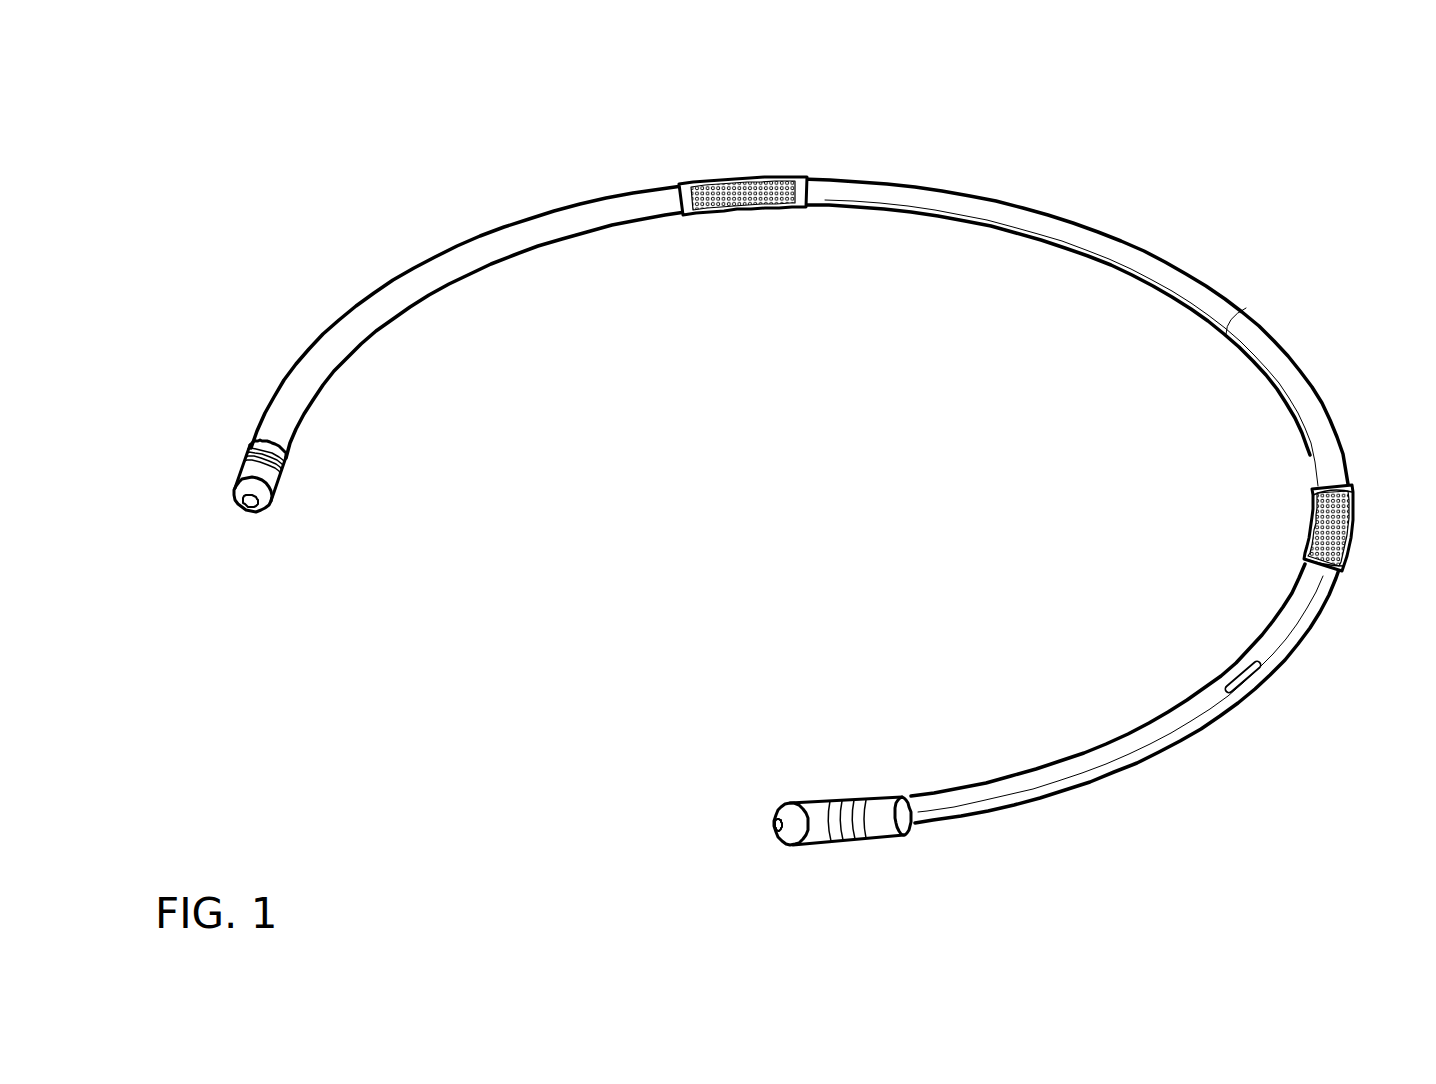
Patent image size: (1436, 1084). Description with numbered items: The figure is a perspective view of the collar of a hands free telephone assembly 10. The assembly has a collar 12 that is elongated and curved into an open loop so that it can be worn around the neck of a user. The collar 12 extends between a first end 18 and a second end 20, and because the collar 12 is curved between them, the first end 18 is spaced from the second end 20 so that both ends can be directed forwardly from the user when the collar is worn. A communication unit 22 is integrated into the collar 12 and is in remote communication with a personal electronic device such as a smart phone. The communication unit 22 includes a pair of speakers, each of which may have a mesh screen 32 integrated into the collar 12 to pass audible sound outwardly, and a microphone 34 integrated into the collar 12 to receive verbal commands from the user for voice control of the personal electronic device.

The hands free telephone assembly 10 is at (750, 493).
The collar 12 is at (925, 186).
The first end 18 is at (243, 440).
The second end 20 is at (903, 814).
The communication unit 22 is at (738, 142).
The mesh screen 32 is at (1336, 515).
The microphone 34 is at (1244, 676).